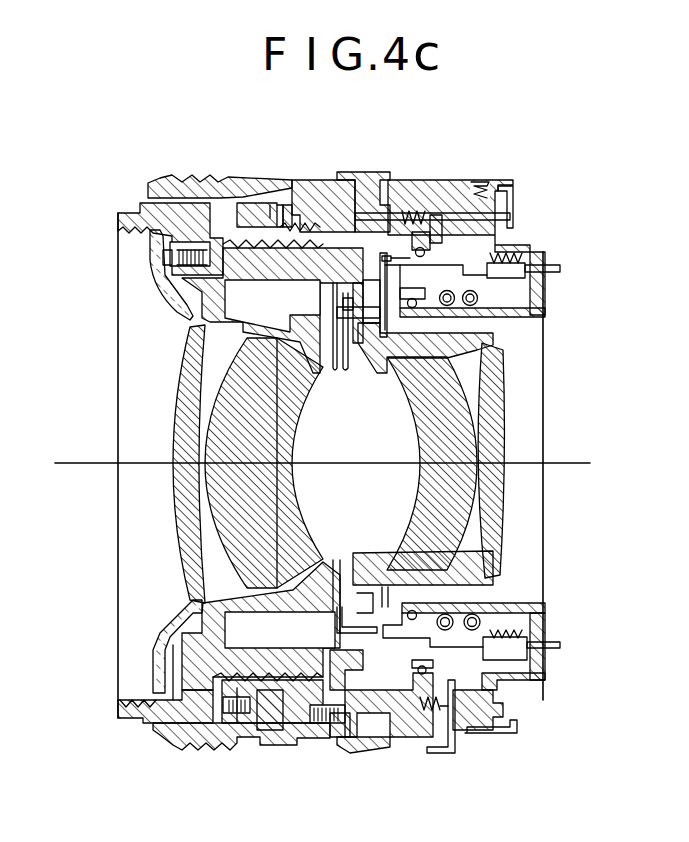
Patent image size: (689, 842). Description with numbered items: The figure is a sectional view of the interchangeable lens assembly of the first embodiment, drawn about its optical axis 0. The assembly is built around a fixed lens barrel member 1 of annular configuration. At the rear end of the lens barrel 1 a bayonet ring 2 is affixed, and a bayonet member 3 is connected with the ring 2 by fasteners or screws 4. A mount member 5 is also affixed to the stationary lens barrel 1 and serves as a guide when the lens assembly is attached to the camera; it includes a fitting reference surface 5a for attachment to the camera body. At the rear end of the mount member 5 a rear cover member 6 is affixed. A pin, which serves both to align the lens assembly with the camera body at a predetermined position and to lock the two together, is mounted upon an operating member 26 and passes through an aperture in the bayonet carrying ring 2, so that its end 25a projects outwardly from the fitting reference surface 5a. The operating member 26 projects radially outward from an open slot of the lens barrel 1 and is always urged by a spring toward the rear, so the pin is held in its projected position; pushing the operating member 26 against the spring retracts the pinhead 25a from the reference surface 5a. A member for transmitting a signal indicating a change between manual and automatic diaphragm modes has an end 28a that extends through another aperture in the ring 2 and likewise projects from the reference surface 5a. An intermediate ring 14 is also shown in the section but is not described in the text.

The optical axis 0 is at (322, 460).
The fixed lens barrel member 1 is at (313, 192).
The intermediate ring 14 is at (364, 186).
The bayonet ring 2 is at (445, 187).
The screws 4 is at (483, 181).
The bayonet member 3 is at (514, 188).
The end of signal transmitting member 28a is at (510, 221).
The rear cover member 6 is at (545, 297).
The mount member 5 is at (520, 670).
The fitting reference surface 5a is at (505, 690).
The pin end 25a is at (505, 708).
The operating member 26 is at (440, 755).